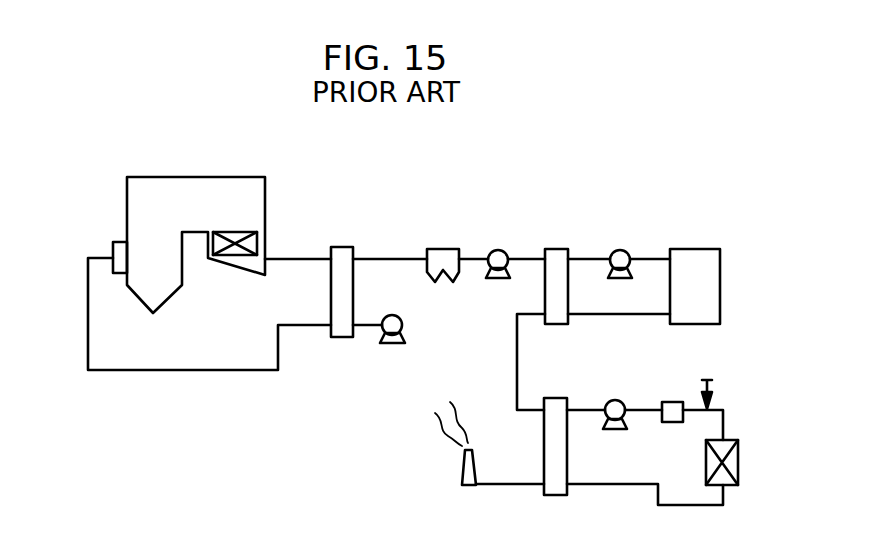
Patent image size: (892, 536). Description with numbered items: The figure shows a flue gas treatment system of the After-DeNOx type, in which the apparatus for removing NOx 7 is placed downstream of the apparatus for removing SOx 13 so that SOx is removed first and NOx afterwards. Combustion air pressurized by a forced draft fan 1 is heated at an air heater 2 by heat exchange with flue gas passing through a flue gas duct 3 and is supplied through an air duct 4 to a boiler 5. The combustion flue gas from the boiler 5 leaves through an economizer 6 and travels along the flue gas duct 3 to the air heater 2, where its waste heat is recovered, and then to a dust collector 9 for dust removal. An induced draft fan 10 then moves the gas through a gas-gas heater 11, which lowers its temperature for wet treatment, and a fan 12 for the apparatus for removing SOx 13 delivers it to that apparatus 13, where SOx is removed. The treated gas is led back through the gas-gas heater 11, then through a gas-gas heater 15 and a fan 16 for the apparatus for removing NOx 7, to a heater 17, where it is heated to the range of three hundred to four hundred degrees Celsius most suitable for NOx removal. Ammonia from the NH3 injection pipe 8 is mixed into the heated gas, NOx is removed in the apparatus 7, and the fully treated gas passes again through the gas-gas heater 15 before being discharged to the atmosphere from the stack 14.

The forced draft fan 1 is at (403, 318).
The air heater 2 is at (339, 247).
The flue gas duct 3 is at (291, 258).
The air duct 4 is at (173, 371).
The boiler 5 is at (167, 177).
The economizer 6 is at (237, 232).
The apparatus for removing NOx 7 is at (739, 453).
The NH3 injection pipe 8 is at (712, 380).
The dust collector 9 is at (438, 249).
The induced draft fan 10 is at (497, 250).
The gas-gas heater 11 is at (554, 249).
The fan for the apparatus for removing SOx 12 is at (616, 250).
The apparatus for removing SOx 13 is at (701, 249).
The stack 14 is at (462, 471).
The gas-gas heater 15 is at (553, 398).
The fan for the apparatus for removing NOx 16 is at (617, 400).
The heater 17 is at (667, 402).